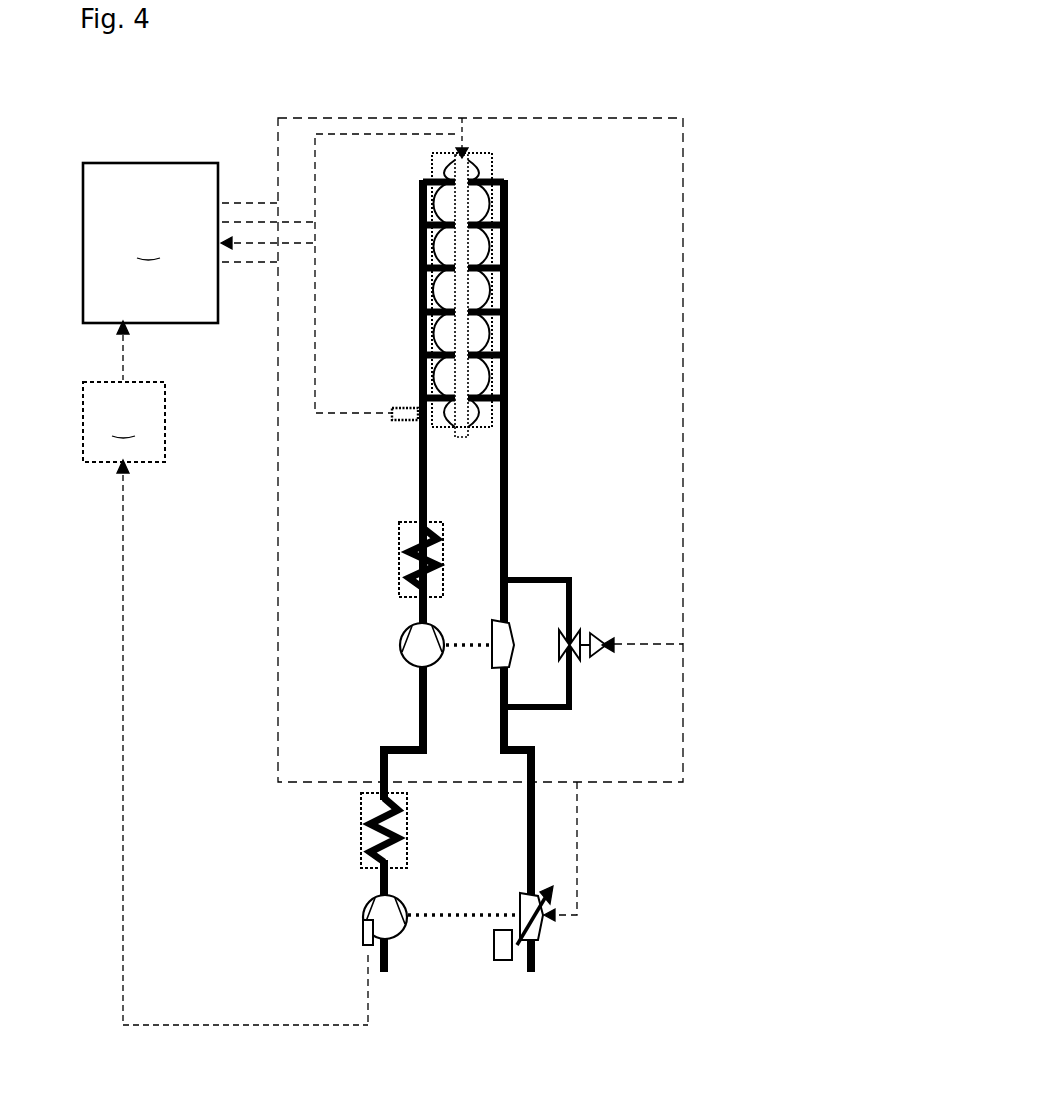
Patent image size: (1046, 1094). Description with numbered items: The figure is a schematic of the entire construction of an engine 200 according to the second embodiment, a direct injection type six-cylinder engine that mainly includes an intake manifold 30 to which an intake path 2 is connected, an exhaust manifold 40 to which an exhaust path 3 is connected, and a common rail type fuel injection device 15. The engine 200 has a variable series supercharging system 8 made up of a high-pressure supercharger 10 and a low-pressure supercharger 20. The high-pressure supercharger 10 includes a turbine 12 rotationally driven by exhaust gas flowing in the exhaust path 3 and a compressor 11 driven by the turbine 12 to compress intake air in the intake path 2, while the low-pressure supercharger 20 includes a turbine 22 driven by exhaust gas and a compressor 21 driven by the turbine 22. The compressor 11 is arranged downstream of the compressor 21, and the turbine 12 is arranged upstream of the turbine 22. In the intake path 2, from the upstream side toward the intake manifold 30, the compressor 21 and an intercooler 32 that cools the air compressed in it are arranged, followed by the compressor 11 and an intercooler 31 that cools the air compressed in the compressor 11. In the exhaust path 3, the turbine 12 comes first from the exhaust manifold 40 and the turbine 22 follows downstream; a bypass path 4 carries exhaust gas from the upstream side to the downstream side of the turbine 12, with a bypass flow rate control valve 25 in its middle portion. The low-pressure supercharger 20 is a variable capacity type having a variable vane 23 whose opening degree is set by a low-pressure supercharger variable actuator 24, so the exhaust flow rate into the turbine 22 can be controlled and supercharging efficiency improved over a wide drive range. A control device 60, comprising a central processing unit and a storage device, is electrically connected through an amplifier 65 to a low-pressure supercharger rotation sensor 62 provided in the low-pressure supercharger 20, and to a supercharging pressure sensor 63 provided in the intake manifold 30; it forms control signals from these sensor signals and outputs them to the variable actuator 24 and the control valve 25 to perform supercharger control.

The engine 200 is at (696, 42).
The intake path 2 is at (407, 458).
The exhaust path 3 is at (519, 458).
The bypass path 4 is at (576, 597).
The variable series supercharging system 8 is at (610, 772).
The high-pressure supercharger 10 is at (505, 661).
The compressor 11 is at (399, 645).
The turbine 12 is at (510, 660).
The fuel injection device 15 is at (482, 208).
The low-pressure supercharger 20 is at (458, 906).
The compressor 21 is at (362, 915).
The turbine 22 is at (547, 925).
The variable vane 23 is at (553, 900).
The low-pressure supercharger variable actuator 24 is at (505, 961).
The bypass flow rate control valve 25 is at (598, 655).
The intake manifold 30 is at (406, 290).
The intercooler 31 is at (398, 560).
The intercooler 32 is at (360, 830).
The exhaust manifold 40 is at (517, 289).
The control device 60 is at (199, 271).
The low-pressure supercharger rotation sensor 62 is at (363, 938).
The supercharging pressure sensor 63 is at (411, 406).
The amplifier 65 is at (225, 703).